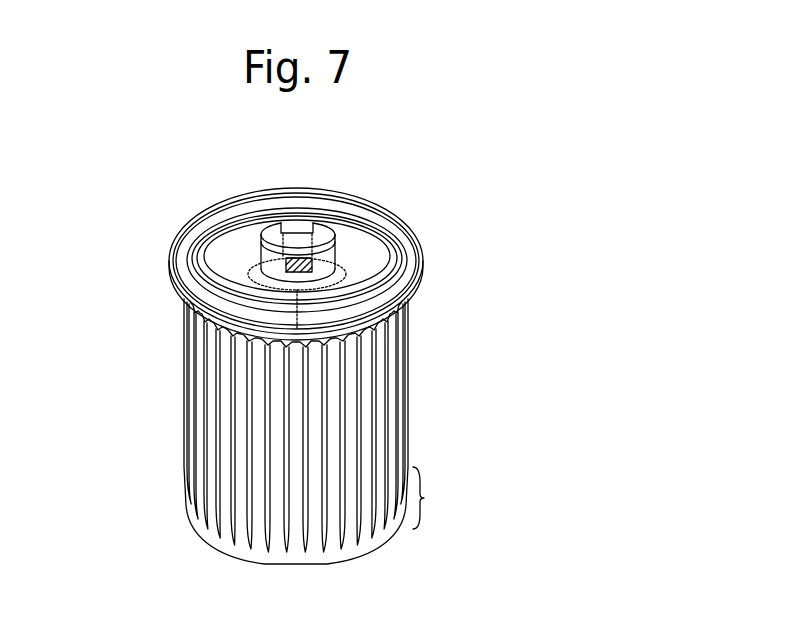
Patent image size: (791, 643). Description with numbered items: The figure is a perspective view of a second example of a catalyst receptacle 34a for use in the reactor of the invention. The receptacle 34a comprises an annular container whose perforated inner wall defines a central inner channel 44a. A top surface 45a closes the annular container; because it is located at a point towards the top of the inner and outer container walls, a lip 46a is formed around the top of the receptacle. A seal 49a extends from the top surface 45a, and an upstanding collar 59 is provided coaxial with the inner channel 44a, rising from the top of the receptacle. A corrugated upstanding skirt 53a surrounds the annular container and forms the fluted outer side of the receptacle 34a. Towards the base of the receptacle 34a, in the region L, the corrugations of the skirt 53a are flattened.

The catalyst receptacle 34a is at (162, 357).
The inner channel 44a is at (323, 225).
The top surface 45a is at (230, 248).
The lip 46a is at (383, 216).
The seal 49a is at (418, 245).
The corrugated upstanding skirt 53a is at (395, 402).
The upstanding collar 59 is at (273, 228).
The region L is at (429, 498).